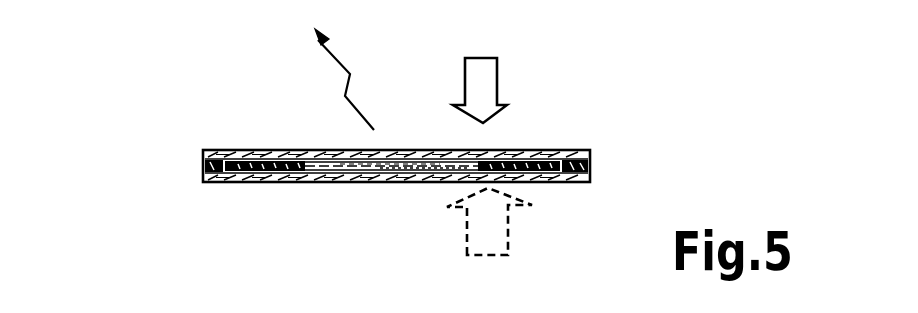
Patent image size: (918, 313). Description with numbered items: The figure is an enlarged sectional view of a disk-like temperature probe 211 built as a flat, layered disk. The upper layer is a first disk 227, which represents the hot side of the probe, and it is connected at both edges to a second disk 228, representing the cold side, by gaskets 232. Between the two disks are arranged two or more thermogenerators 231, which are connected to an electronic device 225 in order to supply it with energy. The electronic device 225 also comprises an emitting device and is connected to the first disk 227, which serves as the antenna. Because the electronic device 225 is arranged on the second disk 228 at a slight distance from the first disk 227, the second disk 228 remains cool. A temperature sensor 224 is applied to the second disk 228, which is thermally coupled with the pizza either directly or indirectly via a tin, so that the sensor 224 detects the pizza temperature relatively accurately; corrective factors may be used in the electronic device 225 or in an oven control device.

The disk-like temperature probe 211 is at (655, 94).
The temperature sensor 224 is at (434, 182).
The electronic device 225 is at (373, 182).
The first disk 227 is at (447, 150).
The second disk 228 is at (338, 182).
The thermogenerators 231 is at (280, 150).
The gaskets 232 is at (203, 170).